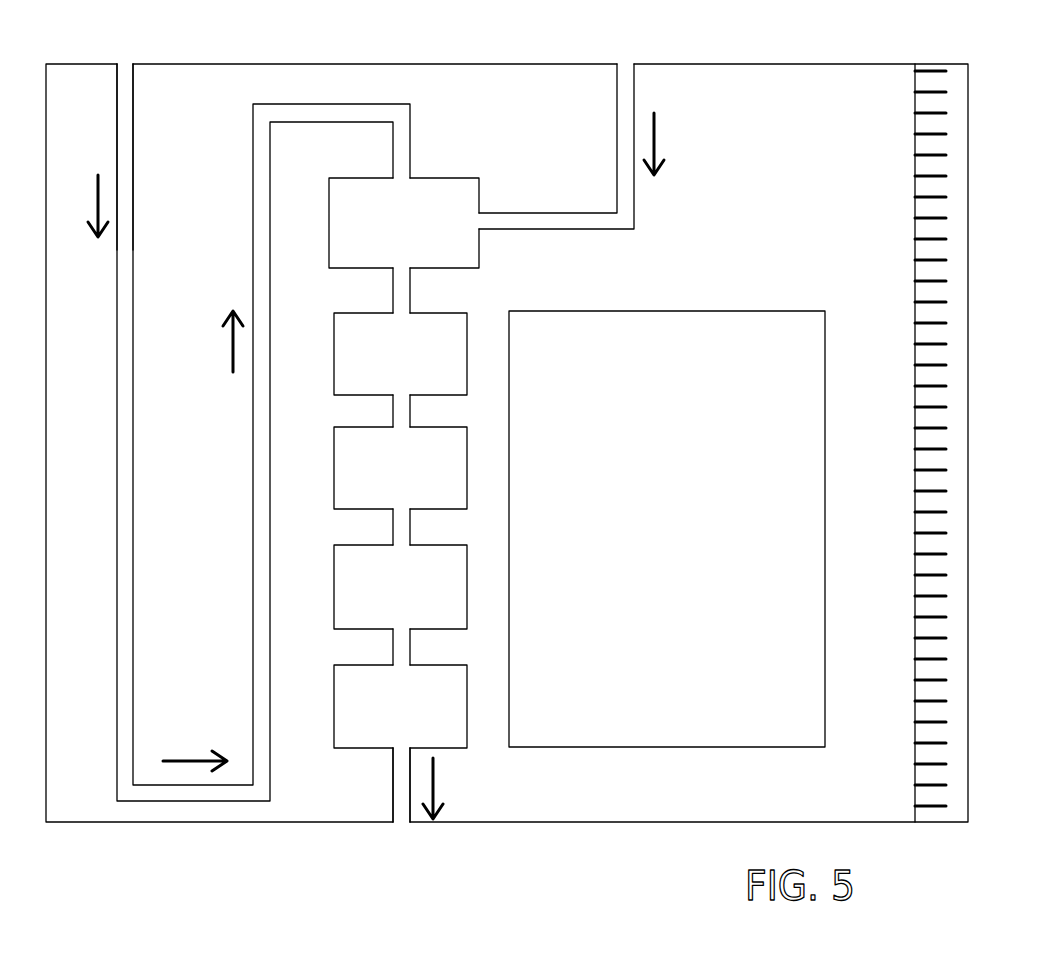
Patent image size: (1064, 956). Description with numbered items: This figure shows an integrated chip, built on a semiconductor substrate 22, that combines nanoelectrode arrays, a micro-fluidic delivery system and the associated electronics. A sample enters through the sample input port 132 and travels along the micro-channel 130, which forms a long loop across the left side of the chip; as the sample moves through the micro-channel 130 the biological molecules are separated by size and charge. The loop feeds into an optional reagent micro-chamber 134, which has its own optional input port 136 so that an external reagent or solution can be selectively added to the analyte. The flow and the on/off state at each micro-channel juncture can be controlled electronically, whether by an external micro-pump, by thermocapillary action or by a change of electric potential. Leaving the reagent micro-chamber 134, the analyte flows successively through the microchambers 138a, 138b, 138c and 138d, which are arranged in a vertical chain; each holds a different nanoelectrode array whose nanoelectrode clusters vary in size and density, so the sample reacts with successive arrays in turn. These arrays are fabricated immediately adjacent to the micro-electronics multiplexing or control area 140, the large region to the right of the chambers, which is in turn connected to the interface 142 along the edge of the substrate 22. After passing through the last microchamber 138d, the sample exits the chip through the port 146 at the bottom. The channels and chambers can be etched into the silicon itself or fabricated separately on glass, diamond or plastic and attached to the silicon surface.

The substrate 22 is at (788, 92).
The micro-channel 130 is at (104, 408).
The sample input port 132 is at (122, 65).
The reagent micro-chamber 134 is at (437, 199).
The input port 136 is at (622, 70).
The microchamber 138a is at (359, 362).
The microchamber 138b is at (355, 473).
The microchamber 138c is at (367, 588).
The microchamber 138d is at (368, 718).
The micro-electronics multiplexing or control area 140 is at (694, 764).
The interface 142 is at (953, 135).
The port 146 is at (402, 815).